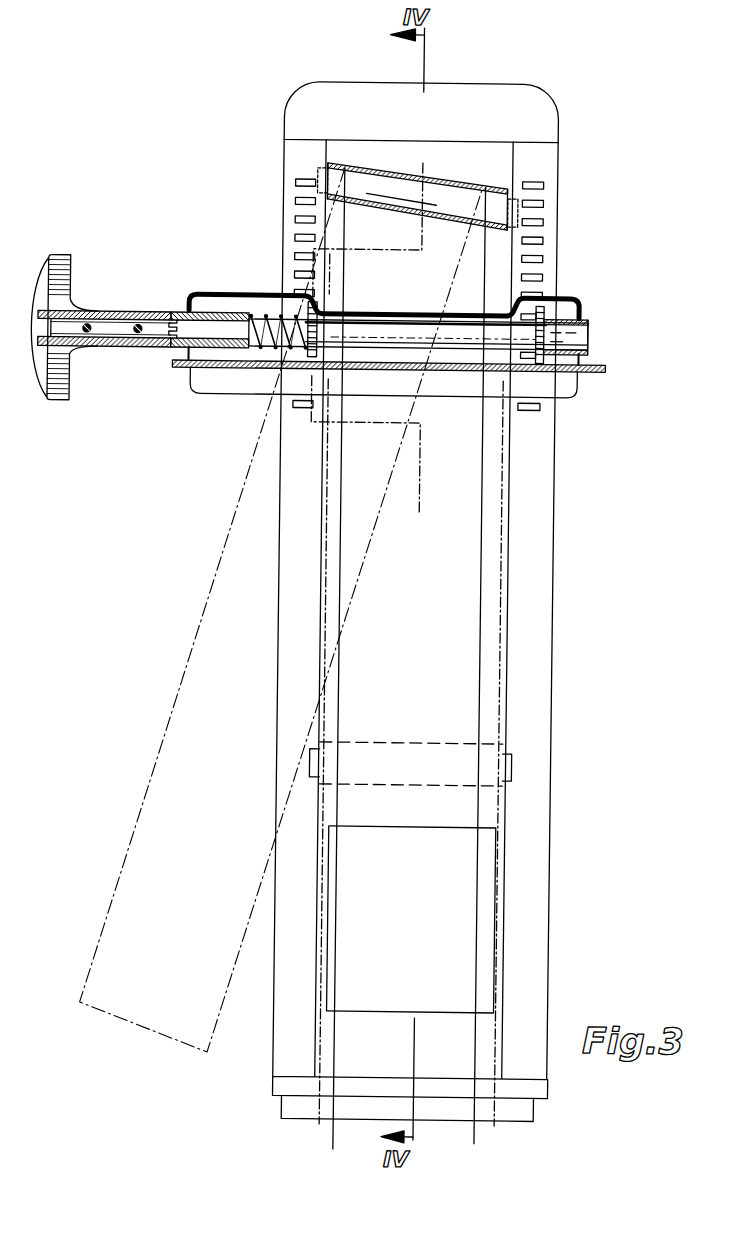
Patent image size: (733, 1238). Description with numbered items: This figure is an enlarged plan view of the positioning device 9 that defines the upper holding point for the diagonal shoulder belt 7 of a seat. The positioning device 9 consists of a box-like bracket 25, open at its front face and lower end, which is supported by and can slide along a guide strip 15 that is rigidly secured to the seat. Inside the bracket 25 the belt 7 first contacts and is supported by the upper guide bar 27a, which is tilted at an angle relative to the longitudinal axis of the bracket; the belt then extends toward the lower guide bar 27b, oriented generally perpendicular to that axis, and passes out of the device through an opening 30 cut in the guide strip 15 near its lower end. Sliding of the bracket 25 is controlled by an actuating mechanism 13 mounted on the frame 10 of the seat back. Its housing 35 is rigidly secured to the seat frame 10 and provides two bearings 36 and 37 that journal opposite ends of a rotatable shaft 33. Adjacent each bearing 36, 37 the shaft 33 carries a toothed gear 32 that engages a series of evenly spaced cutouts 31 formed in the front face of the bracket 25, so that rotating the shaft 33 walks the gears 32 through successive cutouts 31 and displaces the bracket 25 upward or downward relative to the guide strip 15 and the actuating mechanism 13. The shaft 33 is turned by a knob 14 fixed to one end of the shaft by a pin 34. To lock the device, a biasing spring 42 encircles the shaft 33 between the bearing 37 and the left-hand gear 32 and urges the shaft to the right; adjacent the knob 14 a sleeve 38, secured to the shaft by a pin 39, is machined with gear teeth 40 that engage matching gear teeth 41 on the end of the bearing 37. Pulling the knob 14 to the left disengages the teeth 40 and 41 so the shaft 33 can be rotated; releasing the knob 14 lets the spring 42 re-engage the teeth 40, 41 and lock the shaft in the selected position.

The diagonal shoulder belt 7 is at (201, 698).
The positioning device 9 is at (560, 143).
The frame 10 is at (175, 371).
The actuating mechanism 13 is at (193, 270).
The knob 14 is at (57, 394).
The guide strip 15 is at (494, 482).
The bracket 25 is at (454, 112).
The upper guide bar 27a is at (432, 192).
The lower guide bar 27b is at (477, 756).
The opening 30 is at (454, 863).
The cutouts 31 is at (537, 221).
The toothed gear 32 is at (541, 312).
The rotatable shaft 33 is at (372, 328).
The pin 34 is at (86, 336).
The housing 35 is at (556, 293).
The bearing 36 is at (586, 318).
The bearing 37 is at (219, 297).
The sleeve 38 is at (131, 316).
The pin 39 is at (137, 335).
The gear teeth 40 is at (164, 315).
The gear teeth 41 is at (171, 350).
The biasing spring 42 is at (262, 317).